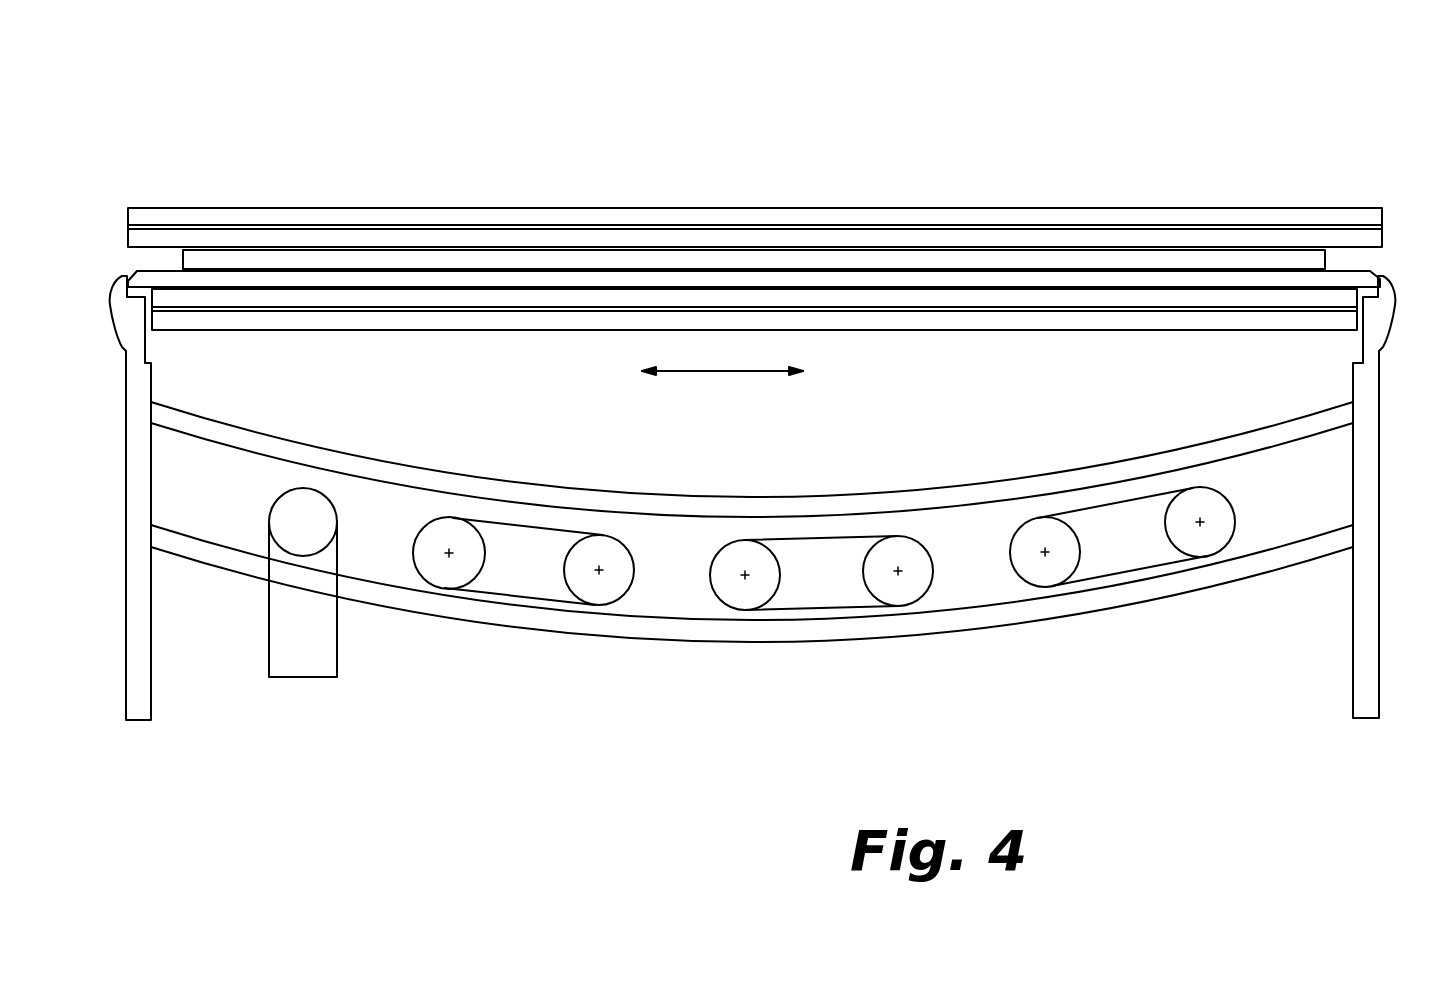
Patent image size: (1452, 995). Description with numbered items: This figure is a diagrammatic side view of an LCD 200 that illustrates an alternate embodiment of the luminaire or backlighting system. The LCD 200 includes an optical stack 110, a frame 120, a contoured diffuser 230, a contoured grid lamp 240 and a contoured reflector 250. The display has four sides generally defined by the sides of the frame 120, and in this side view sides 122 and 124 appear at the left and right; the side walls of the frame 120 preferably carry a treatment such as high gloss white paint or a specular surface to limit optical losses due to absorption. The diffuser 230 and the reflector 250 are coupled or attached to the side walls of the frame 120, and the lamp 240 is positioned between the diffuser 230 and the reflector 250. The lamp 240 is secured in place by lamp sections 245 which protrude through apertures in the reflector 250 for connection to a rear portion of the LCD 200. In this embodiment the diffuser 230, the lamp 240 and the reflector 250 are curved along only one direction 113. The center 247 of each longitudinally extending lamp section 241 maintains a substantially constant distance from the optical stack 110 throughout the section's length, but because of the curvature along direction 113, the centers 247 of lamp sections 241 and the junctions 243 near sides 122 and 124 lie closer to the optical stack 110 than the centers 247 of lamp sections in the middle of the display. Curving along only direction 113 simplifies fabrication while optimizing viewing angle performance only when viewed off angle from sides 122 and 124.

The LCD 200 is at (333, 109).
The optical stack 110 is at (117, 258).
The direction 113 is at (698, 370).
The frame 120 is at (151, 690).
The side 122 is at (1395, 479).
The side 124 is at (112, 529).
The contoured diffuser 230 is at (1132, 465).
The contoured grid lamp 240 is at (698, 549).
The lamp section 241 is at (613, 603).
The junction 243 is at (520, 595).
The lamp section 245 is at (338, 645).
The center 247 is at (743, 578).
The contoured reflector 250 is at (230, 565).